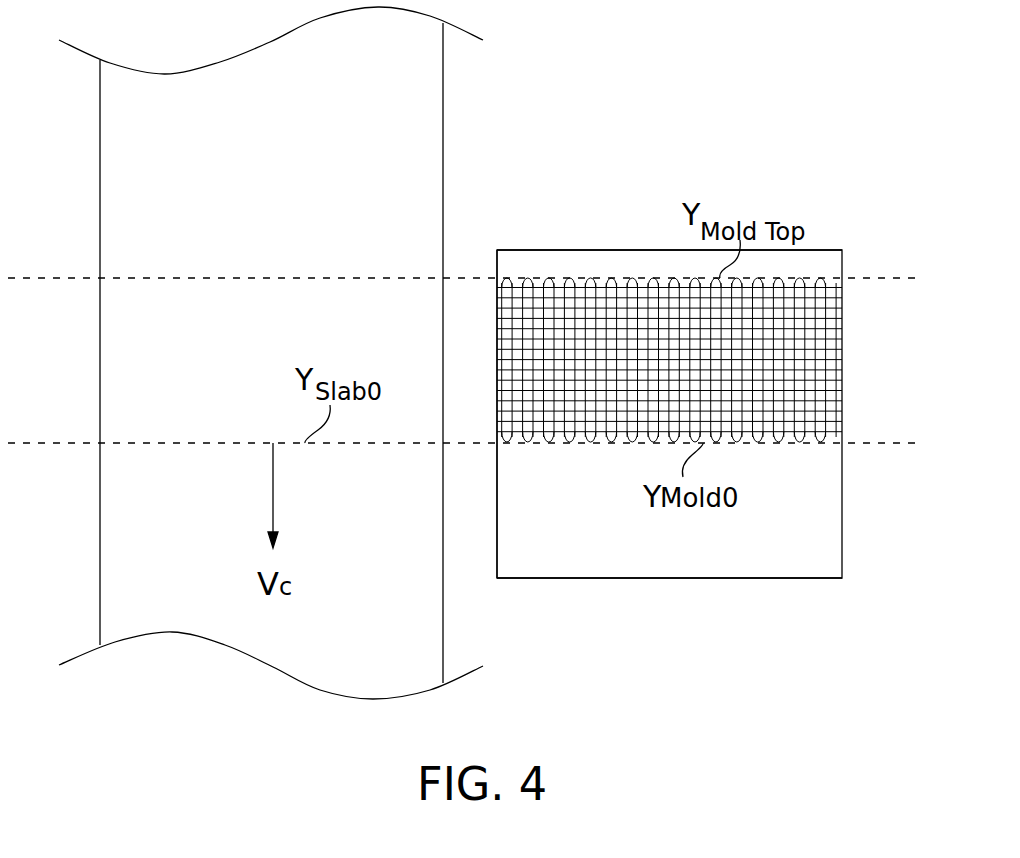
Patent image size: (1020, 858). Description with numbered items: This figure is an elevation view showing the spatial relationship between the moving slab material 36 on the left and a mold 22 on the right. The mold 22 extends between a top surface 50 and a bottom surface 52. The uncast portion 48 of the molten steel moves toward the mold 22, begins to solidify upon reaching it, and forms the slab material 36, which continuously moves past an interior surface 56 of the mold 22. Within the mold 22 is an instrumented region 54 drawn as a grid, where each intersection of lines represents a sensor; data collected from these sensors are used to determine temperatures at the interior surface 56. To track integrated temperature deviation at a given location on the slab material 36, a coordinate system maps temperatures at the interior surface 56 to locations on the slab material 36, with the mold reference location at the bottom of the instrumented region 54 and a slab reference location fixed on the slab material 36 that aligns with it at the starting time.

The mold 22 is at (783, 175).
The slab material 36 is at (118, 332).
The uncast portion 48 is at (425, 188).
The top surface 50 is at (628, 250).
The bottom surface 52 is at (740, 580).
The instrumented region 54 is at (818, 373).
The interior surface 56 is at (497, 318).